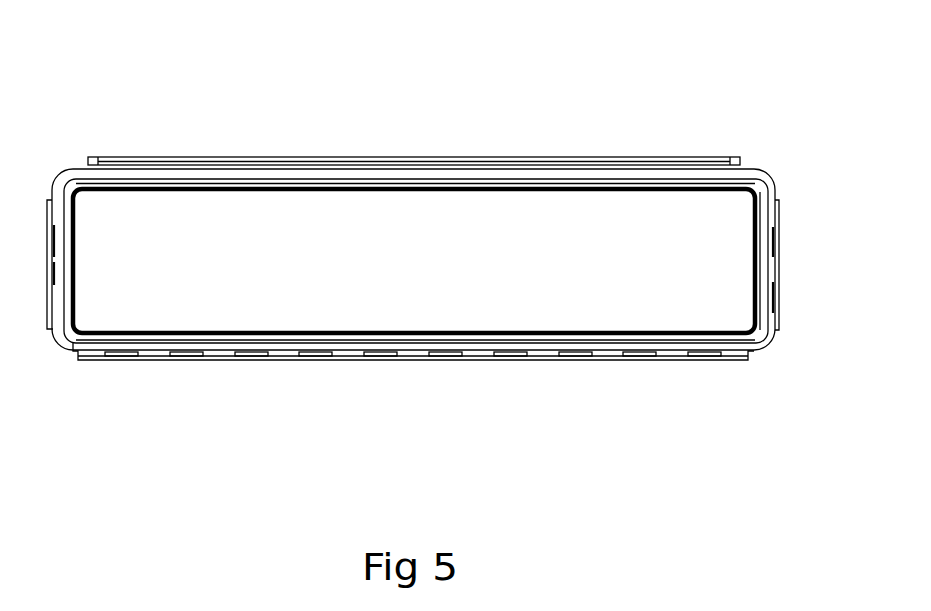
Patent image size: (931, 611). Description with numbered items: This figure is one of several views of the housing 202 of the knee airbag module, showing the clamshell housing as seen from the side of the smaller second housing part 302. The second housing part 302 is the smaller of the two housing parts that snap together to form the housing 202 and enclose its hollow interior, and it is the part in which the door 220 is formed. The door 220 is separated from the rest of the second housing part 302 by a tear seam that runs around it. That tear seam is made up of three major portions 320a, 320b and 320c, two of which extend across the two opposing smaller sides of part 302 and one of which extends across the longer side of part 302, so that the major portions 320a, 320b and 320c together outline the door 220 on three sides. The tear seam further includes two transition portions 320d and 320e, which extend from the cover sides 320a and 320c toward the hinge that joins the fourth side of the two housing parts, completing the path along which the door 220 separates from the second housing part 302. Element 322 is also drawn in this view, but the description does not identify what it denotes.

The second housing part 302 is at (700, 366).
The top plate 322 is at (525, 163).
The housing 202 is at (368, 227).
The door 220 is at (748, 301).
The tear seam major portion 320a is at (750, 223).
The tear seam major portion 320b is at (615, 332).
The tear seam major portion 320c is at (75, 301).
The tear seam transition portion 320d is at (708, 193).
The tear seam transition portion 320e is at (98, 192).